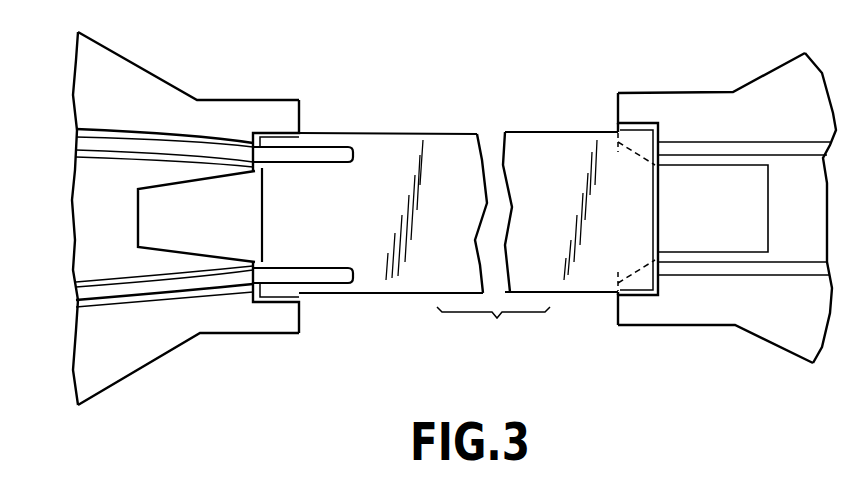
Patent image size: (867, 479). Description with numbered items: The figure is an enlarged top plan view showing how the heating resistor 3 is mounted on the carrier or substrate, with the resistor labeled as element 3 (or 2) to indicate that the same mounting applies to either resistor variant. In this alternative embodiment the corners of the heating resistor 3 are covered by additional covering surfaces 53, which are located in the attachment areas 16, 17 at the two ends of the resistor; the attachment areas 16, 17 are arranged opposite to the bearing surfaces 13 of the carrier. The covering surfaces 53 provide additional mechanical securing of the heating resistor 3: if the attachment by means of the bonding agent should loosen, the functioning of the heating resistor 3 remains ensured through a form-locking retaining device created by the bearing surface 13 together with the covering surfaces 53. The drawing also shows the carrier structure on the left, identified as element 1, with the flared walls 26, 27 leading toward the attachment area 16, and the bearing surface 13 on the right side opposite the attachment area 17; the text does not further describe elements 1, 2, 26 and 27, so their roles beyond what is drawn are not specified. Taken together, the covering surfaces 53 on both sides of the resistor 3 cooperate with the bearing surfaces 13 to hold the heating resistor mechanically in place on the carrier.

The first housing 1 is at (189, 213).
The tube 2 is at (520, 147).
The heating resistor 3 is at (440, 175).
The bearing surfaces 13 is at (705, 209).
The attachment area 16 is at (302, 313).
The attachment area 17 is at (618, 312).
The lower sleeve wall 26 is at (117, 293).
The upper sleeve wall 27 is at (122, 147).
The covering surfaces 53 is at (282, 142).